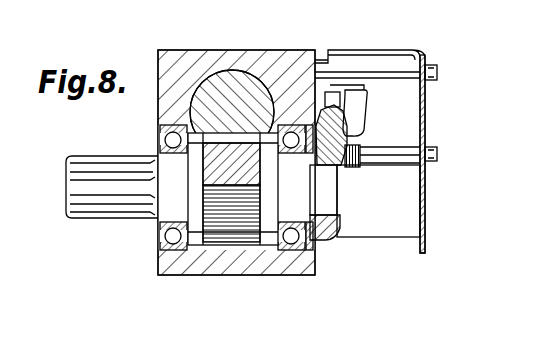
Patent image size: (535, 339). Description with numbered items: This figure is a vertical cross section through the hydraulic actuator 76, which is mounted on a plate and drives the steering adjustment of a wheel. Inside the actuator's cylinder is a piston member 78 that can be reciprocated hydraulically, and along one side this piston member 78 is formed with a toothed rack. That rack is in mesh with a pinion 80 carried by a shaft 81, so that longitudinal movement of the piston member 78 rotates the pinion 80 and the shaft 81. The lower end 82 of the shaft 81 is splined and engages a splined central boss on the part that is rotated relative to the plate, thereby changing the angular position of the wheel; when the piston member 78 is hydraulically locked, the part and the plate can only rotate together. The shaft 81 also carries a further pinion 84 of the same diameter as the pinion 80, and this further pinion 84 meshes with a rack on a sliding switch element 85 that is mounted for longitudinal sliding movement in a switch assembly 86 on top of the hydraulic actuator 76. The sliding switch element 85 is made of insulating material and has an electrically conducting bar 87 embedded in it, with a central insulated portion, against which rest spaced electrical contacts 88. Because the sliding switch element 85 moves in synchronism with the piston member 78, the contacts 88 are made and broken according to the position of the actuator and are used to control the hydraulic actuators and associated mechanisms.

The hydraulic actuator 76 is at (318, 272).
The piston member 78 is at (178, 101).
The pinion 80 is at (221, 225).
The lower end of the shaft 82 is at (100, 214).
The sliding switch element 85 is at (320, 117).
The switch assembly 86 is at (357, 47).
The electrically conducting bar 87 is at (345, 127).
The electrical contacts 88 is at (353, 100).
The shaft 81 is at (305, 225).
The further pinion 84 is at (366, 237).